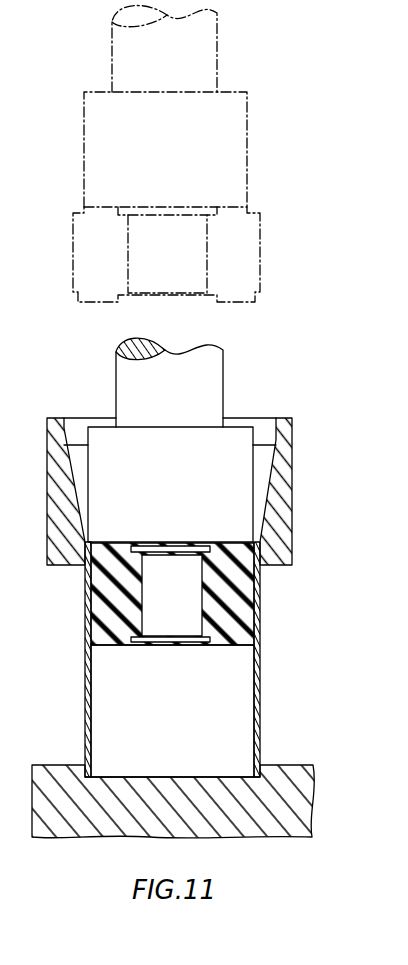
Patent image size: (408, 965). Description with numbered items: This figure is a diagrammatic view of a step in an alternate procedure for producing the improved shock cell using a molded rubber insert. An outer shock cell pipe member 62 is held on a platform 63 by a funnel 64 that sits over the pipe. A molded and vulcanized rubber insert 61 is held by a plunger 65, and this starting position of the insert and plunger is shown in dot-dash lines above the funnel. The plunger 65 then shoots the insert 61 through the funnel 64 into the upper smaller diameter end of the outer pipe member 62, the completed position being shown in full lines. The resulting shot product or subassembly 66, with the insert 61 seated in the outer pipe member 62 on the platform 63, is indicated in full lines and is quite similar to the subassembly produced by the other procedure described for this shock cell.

The rubber insert 61 is at (261, 265).
The outer shock cell pipe member 62 is at (262, 692).
The platform 63 is at (257, 810).
The funnel 64 is at (272, 495).
The plunger 65 is at (248, 133).
The shot product or subassembly 66 is at (86, 699).